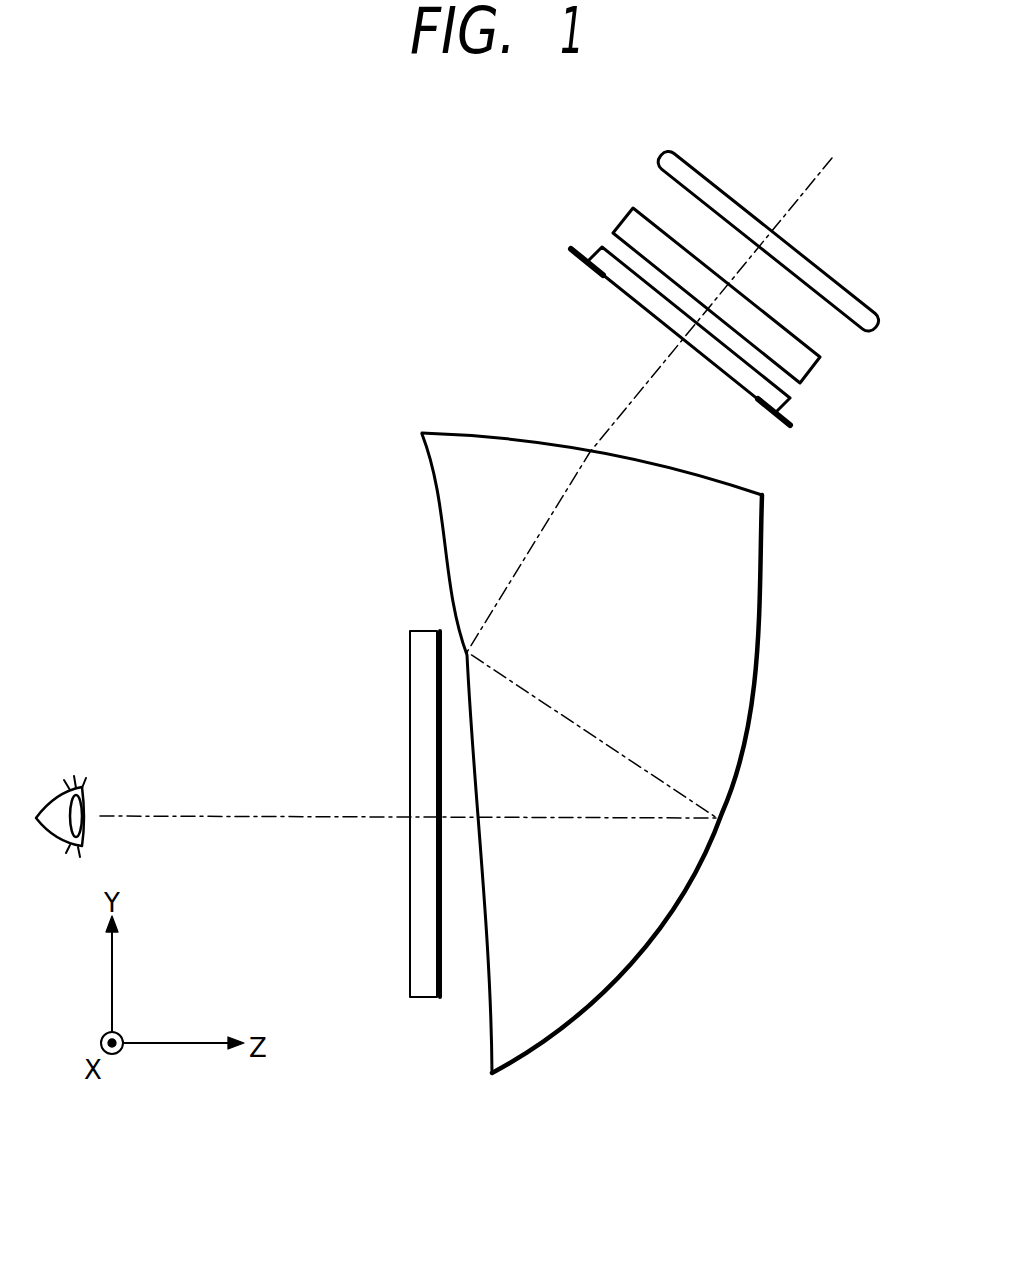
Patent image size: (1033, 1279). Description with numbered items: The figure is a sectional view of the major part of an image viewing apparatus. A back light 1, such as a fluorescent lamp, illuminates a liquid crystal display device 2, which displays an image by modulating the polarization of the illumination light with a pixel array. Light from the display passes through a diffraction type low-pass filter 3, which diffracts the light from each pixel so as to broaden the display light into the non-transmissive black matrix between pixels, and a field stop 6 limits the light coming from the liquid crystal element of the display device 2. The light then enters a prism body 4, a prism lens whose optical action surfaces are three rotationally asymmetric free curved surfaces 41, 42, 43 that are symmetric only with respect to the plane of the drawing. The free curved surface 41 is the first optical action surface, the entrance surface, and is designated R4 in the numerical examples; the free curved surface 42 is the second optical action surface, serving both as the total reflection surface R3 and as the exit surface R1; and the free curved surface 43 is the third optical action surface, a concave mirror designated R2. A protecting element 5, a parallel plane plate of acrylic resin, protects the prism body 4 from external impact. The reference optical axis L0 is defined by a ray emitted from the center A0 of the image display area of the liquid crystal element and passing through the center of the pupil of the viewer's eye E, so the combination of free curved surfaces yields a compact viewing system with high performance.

The back light 1 is at (663, 158).
The liquid crystal display device 2 is at (631, 225).
The diffraction type low-pass filter 3 is at (592, 258).
The prism body 4 is at (467, 457).
The free curved surface 41 is at (537, 446).
The free curved surface 42 is at (433, 504).
The free curved surface 43 is at (743, 748).
The protecting element 5 is at (422, 982).
The field stop 6 is at (776, 418).
The center of image display area A0 is at (712, 312).
The second optical action surface (exit surface) R1 is at (425, 774).
The third optical action surface (concave mirror) R2 is at (642, 955).
The second optical action surface (total reflection surface) R3 is at (487, 1045).
The first optical action surface (entrance surface) R4 is at (750, 483).
The eye of the viewer E is at (87, 770).
The reference optical axis L0 is at (240, 817).